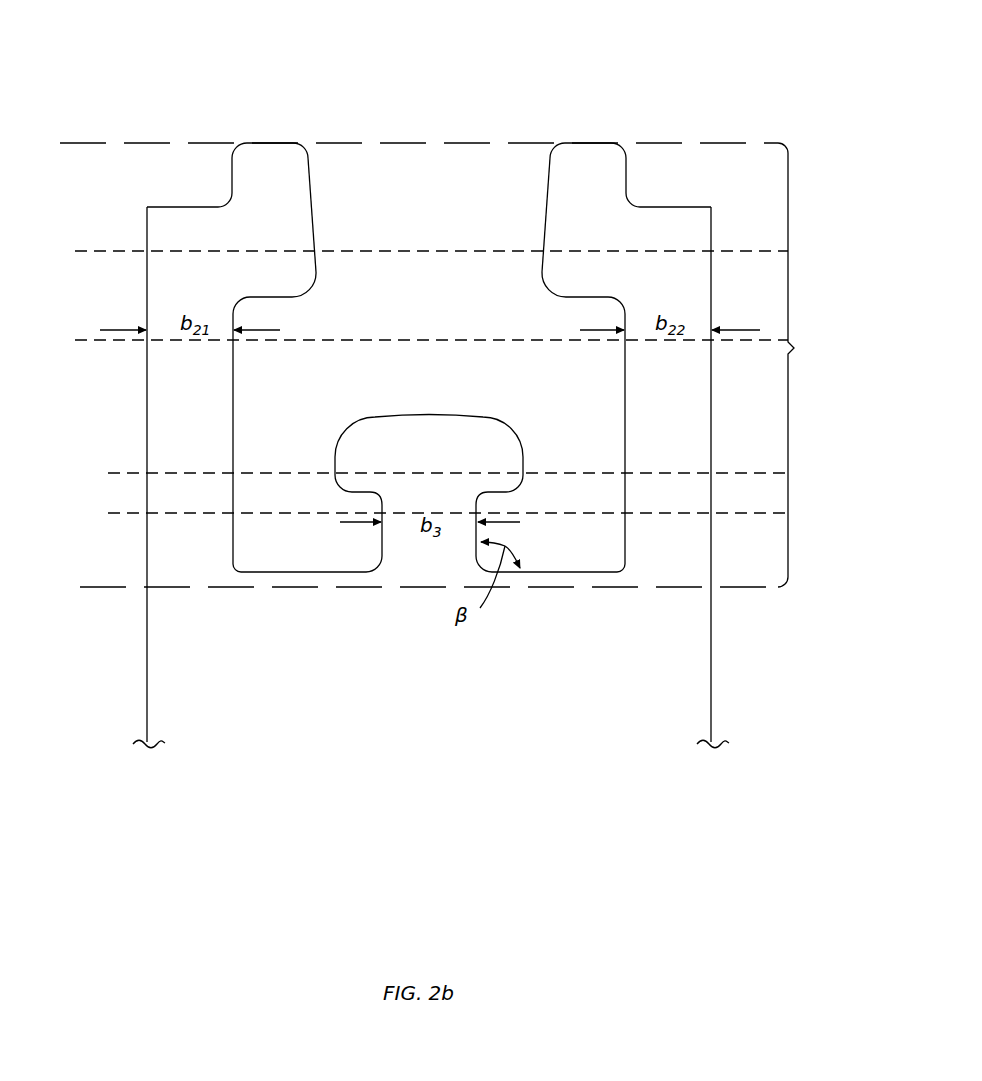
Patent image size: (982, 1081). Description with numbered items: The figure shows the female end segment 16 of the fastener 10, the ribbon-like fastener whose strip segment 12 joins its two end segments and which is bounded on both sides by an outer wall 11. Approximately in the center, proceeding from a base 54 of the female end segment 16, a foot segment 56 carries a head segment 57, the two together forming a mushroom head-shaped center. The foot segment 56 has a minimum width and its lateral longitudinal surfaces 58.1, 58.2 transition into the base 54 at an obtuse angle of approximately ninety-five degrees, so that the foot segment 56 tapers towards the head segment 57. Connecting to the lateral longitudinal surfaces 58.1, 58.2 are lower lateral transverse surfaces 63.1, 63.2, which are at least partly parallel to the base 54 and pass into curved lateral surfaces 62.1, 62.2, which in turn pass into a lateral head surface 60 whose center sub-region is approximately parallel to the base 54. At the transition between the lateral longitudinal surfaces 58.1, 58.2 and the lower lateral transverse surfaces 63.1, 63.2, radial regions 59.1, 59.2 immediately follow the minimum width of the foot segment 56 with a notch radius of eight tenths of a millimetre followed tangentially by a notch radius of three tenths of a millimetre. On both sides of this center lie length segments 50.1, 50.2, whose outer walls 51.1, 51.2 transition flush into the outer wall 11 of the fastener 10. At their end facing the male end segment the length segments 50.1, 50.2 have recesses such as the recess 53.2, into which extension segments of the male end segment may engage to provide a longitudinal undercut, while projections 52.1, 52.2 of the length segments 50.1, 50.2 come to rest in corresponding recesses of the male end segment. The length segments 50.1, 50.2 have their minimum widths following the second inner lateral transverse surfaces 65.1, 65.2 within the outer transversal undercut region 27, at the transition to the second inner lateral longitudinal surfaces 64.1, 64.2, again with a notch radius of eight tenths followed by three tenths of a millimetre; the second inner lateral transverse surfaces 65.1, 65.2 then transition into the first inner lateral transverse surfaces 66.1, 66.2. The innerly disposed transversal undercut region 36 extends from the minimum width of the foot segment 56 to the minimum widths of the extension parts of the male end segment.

The fastener 10 is at (789, 50).
The outer wall 11 is at (145, 683).
The strip segment 12 is at (190, 703).
The female end segment 16 is at (452, 365).
The first outer transversal undercut region 27 is at (78, 251).
The innerly disposed transversal undercut region 36 is at (108, 473).
The length segment 50.1 is at (190, 410).
The length segment 50.2 is at (682, 557).
The outer wall of length segment 51.1 is at (144, 242).
The outer wall of length segment 51.2 is at (752, 216).
The projection 52.1 is at (258, 152).
The projection 52.2 is at (603, 152).
The recess 53.2 is at (192, 168).
The base 54 is at (292, 570).
The foot segment 56 is at (462, 535).
The head segment 57 is at (495, 450).
The lateral longitudinal surface 58.1 is at (379, 543).
The lateral longitudinal surface 58.2 is at (478, 517).
The radial region 59.1 is at (381, 491).
The radial region 59.2 is at (480, 491).
The lateral head surface 60 is at (431, 415).
The curved lateral surface 62.1 is at (334, 455).
The curved lateral surface 62.2 is at (526, 447).
The lower lateral transverse surface 63.1 is at (365, 494).
The lower lateral transverse surface 63.2 is at (485, 494).
The second inner lateral longitudinal surface 64.1 is at (235, 353).
The second inner lateral longitudinal surface 64.2 is at (624, 353).
The second inner lateral transverse surface 65.1 is at (284, 302).
The second inner lateral transverse surface 65.2 is at (574, 302).
The first inner lateral transverse surface 66.1 is at (319, 216).
The first inner lateral transverse surface 66.2 is at (539, 220).